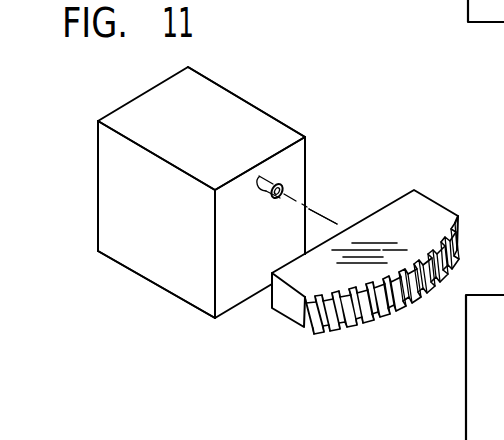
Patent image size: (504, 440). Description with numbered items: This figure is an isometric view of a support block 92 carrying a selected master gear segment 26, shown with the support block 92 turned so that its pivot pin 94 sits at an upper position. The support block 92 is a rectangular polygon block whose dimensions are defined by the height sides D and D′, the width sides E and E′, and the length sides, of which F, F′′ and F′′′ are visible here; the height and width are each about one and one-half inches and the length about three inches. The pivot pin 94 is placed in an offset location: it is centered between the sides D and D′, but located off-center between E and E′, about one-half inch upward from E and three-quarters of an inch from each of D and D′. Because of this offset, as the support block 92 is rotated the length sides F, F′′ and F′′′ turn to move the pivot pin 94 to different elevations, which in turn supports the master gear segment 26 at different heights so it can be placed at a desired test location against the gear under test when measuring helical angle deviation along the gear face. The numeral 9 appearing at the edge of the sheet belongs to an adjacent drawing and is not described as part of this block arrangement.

The support block 92 is at (228, 124).
The pivot pin 94 is at (272, 177).
The master gear segment 26 is at (437, 218).
The adjacent figure numeral 9 is at (496, 251).
The length side of support block F is at (203, 77).
The side of support block F′′′ is at (214, 105).
The side of support block F′′ is at (127, 264).
The width side of support block E′ is at (258, 164).
The width side of support block E is at (240, 288).
The height side of support block D is at (213, 218).
The height side of support block D′ is at (309, 209).